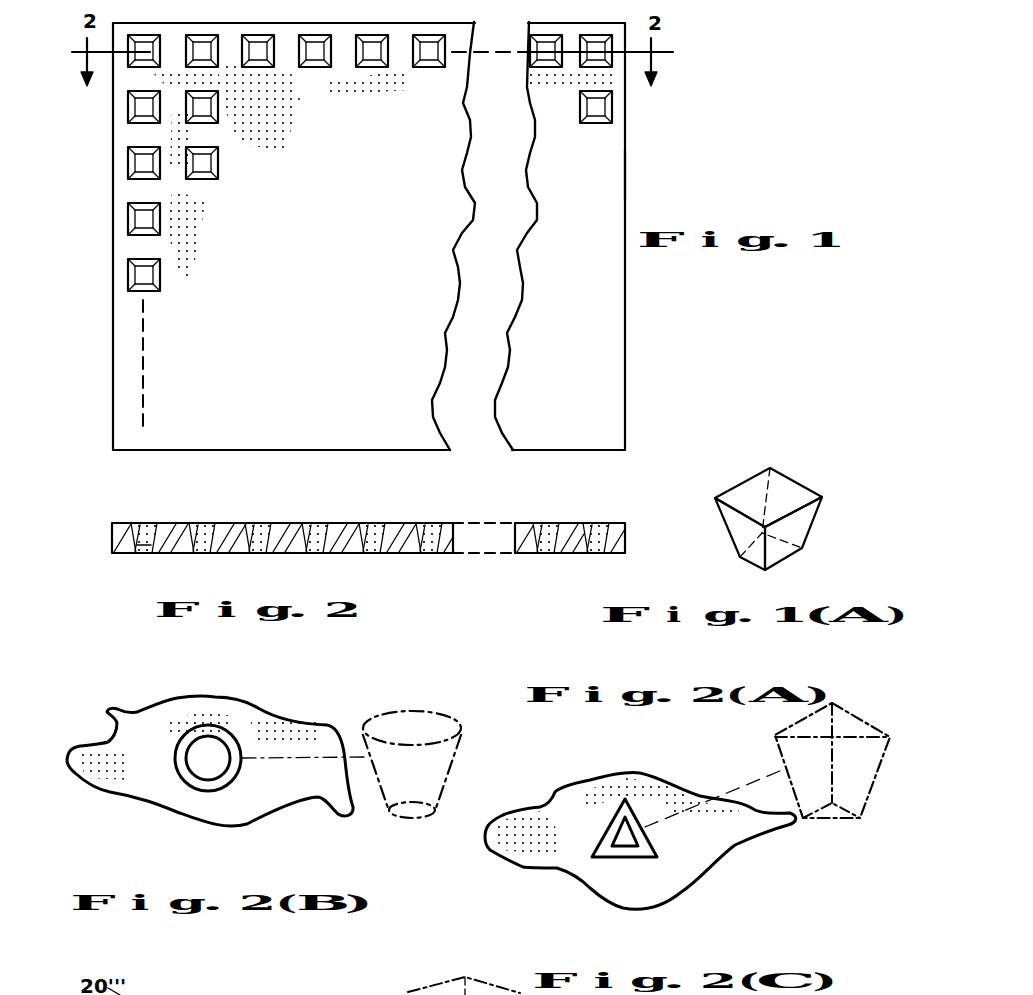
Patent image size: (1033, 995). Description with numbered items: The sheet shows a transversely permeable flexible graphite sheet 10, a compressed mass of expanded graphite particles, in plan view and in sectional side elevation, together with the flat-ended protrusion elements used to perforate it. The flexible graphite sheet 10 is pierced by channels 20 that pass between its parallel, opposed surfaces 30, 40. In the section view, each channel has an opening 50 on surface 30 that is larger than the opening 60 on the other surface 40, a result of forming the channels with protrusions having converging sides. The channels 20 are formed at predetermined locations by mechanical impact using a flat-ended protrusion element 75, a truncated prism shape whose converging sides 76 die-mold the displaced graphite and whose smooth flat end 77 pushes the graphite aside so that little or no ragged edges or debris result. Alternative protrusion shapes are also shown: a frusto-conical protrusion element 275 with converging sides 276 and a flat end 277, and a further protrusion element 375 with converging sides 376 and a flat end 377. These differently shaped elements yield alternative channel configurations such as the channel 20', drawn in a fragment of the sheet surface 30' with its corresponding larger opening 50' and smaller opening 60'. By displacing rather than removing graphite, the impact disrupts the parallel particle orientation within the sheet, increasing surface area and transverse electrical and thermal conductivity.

In FIG. 1, the flexible graphite sheet 10 is at (652, 172).
In FIG. 2, the flexible graphite sheet 10 is at (598, 512).
In FIG. 1, the channels 20 is at (370, 145).
In FIG. 2, the channels 20 is at (358, 538).
In FIG. 1, the opposed surface 30 is at (628, 282).
In FIG. 2, the opposed surface 30 is at (368, 520).
In FIG. 2, the opposed surface 40 is at (561, 555).
In FIG. 1, the openings 50 is at (278, 72).
In FIG. 2, the openings 50 is at (370, 522).
In FIG. 1, the openings 60 is at (257, 76).
In FIG. 2, the openings 60 is at (129, 571).
In FIG. 1A, the flat-ended protrusion element 75 is at (750, 472).
In FIG. 1A, the sides of protrusion 76 is at (805, 527).
In FIG. 1A, the flat end of protrusion 77 is at (740, 560).
In FIG. 2A, the frusto-conical protrusion element 275 is at (426, 703).
In FIG. 2A, the converging sides of protrusion 276 is at (455, 775).
In FIG. 2A, the flat end of protrusion 277 is at (424, 812).
In FIG. 2B, the channel configuration 20' is at (224, 757).
In FIG. 2B, the pad body fragment 30' is at (210, 774).
In FIG. 2B, the circular cavity sidewall 50' is at (176, 785).
In FIG. 2B, the circular cavity bottom 60' is at (262, 734).
In FIG. 2C, the flat-ended protrusion element 375 is at (873, 783).
In FIG. 2C, the converging sides of protrusion 376 is at (785, 760).
In FIG. 2C, the flat end of protrusion 377 is at (830, 815).